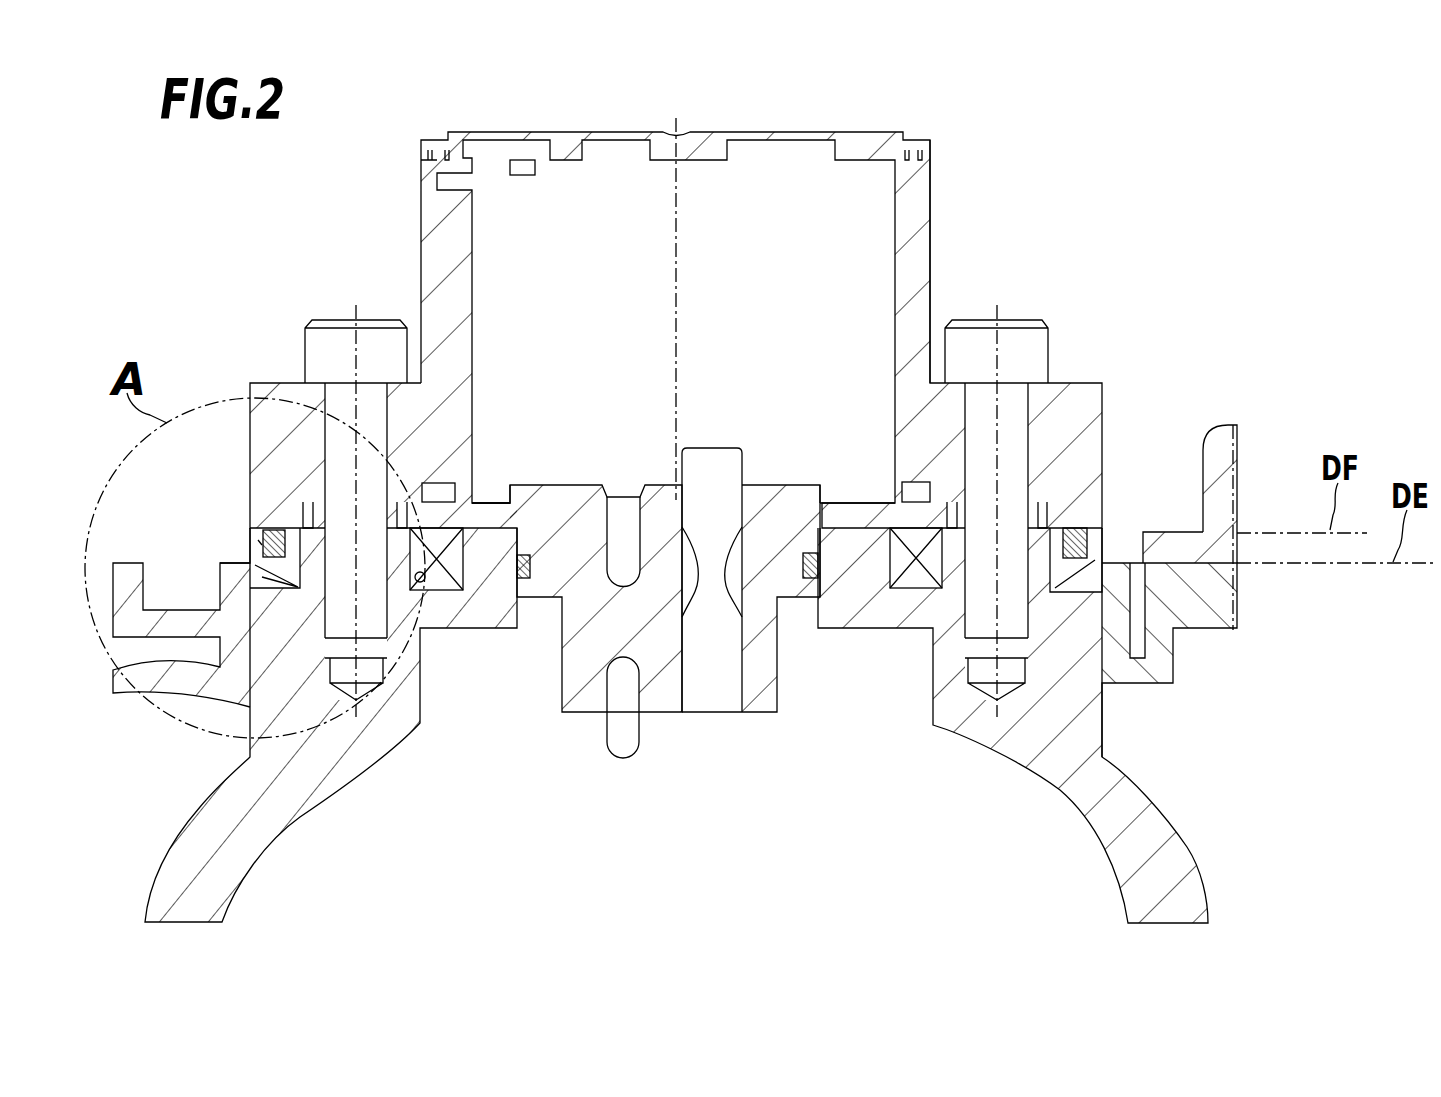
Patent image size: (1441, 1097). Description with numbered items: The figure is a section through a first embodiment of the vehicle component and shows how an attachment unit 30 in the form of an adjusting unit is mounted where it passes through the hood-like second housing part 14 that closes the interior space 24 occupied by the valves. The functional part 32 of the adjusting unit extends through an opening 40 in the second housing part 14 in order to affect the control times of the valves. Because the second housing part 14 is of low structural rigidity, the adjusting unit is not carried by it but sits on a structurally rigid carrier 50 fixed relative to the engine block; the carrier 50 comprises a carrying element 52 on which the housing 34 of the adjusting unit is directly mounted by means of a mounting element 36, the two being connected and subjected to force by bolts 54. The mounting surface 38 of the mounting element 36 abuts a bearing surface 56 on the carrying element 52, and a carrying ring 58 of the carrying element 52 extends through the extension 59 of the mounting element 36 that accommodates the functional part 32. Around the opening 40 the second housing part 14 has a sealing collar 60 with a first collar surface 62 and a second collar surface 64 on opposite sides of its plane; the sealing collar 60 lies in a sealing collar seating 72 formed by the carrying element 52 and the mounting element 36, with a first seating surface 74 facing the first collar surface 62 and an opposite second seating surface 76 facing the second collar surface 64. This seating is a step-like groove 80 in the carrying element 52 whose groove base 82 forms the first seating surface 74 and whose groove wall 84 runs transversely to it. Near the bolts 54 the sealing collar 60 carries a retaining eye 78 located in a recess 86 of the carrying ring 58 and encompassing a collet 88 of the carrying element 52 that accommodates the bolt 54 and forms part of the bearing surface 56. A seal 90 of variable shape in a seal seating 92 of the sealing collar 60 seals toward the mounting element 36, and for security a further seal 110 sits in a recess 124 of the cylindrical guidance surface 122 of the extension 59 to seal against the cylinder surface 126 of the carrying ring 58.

The second housing part 14 is at (1232, 610).
The interior space 24 is at (797, 838).
The attachment unit 30 is at (944, 172).
The functional part 32 is at (705, 668).
The housing 34 is at (917, 238).
The mounting element 36 is at (912, 490).
The mounting surface 38 is at (850, 540).
The opening 40 is at (883, 567).
The carrier 50 is at (209, 845).
The carrying element 52 is at (507, 543).
The bolt 54 is at (343, 453).
The bearing surface 56 is at (490, 517).
The carrying ring 58 is at (490, 598).
The extension 59 is at (543, 597).
The sealing collar 60 is at (1070, 580).
The first collar surface 62 is at (267, 590).
The second collar surface 64 is at (440, 527).
The sealing collar seating 72 is at (257, 553).
The first seating surface 74 is at (263, 580).
The second seating surface 76 is at (303, 520).
The retaining eye 78 is at (443, 573).
The step-like groove 80 is at (1178, 624).
The groove base 82 is at (262, 587).
The groove wall 84 is at (1090, 540).
The recess 86 is at (400, 573).
The collet 88 is at (310, 543).
The seal 90 is at (257, 542).
The seal seating 92 is at (1087, 550).
The seal 110 is at (533, 560).
The cylindrical guidance surface 122 is at (498, 590).
The recess 124 is at (818, 543).
The cylinder surface 126 is at (822, 605).